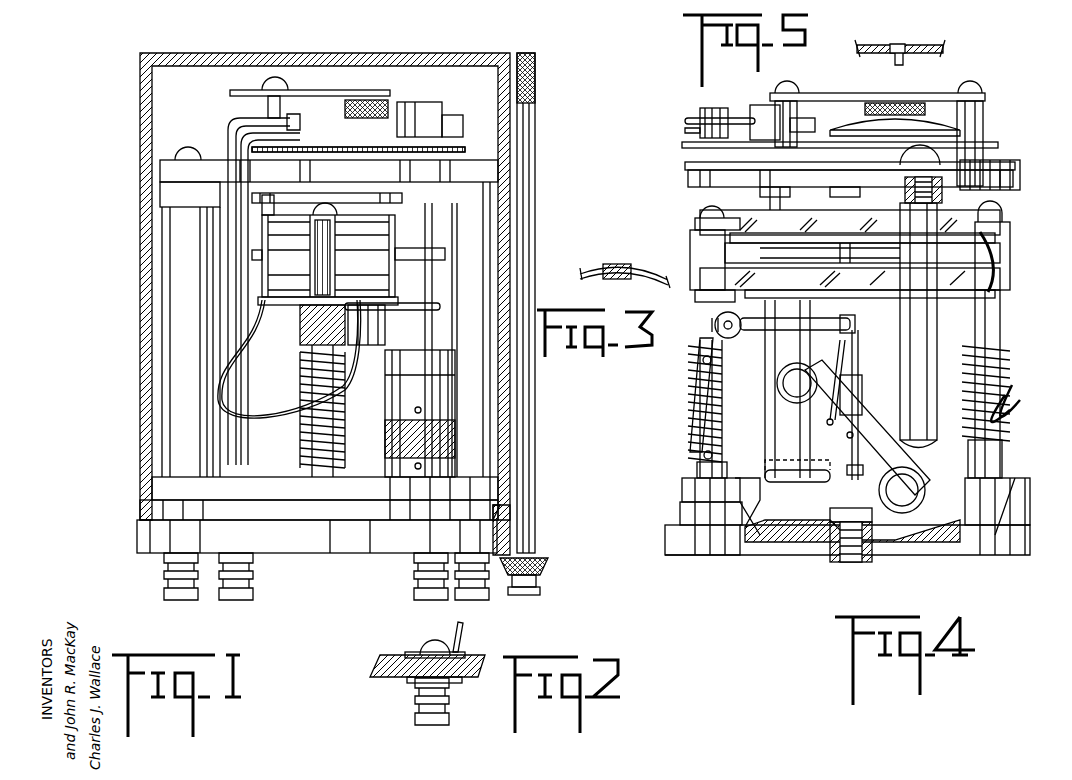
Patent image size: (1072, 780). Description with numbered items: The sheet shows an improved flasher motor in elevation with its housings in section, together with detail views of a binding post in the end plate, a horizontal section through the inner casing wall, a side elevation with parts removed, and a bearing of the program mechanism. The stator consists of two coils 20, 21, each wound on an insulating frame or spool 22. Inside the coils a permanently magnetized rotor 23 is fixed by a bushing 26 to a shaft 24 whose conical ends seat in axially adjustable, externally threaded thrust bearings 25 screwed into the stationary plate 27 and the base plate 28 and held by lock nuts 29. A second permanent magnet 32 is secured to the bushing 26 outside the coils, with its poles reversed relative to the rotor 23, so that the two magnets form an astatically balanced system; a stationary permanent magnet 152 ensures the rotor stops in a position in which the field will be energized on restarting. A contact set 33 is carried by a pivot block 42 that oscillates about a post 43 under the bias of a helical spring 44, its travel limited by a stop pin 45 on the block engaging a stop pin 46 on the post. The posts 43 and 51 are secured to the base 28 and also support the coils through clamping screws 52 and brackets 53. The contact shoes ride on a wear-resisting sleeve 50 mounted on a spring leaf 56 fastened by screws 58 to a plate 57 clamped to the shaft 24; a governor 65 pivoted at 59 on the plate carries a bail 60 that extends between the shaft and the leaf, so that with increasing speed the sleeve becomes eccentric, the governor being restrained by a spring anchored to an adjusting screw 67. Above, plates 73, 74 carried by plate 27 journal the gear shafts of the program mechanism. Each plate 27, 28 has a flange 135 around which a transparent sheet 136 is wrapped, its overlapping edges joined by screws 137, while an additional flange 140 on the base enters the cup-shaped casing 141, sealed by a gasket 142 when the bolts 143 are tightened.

In FIG. 1, the coil 20 is at (215, 262).
In FIG. 1, the coil 21 is at (290, 233).
In FIG. 1, the frame or spool 22 is at (283, 315).
In FIG. 1, the rotor 23 is at (262, 292).
In FIG. 4, the shaft 24 is at (870, 297).
In FIG. 4, the thrust bearing 25 is at (850, 528).
In FIG. 4, the bushing 26 is at (930, 196).
In FIG. 1, the stationary plate 27 is at (300, 230).
In FIG. 4, the stationary plate 27 is at (800, 170).
In FIG. 1, the base plate 28 is at (313, 530).
In FIG. 2, the base plate 28 is at (455, 660).
In FIG. 4, the base plate 28 is at (685, 540).
In FIG. 4, the lock nut 29 is at (890, 530).
In FIG. 1, the permanent magnet 32 is at (400, 212).
In FIG. 1, the contact set 33 is at (440, 306).
In FIG. 4, the contact set 33 is at (722, 320).
In FIG. 1, the pivot block 42 is at (305, 365).
In FIG. 1, the post 43 is at (305, 455).
In FIG. 4, the post 43 is at (705, 457).
In FIG. 1, the helical spring 44 is at (345, 410).
In FIG. 4, the helical spring 44 is at (690, 408).
In FIG. 4, the stop pin 45 is at (690, 347).
In FIG. 4, the stop pin 46 is at (692, 362).
In FIG. 4, the sleeve 50 is at (960, 336).
In FIG. 4, the post 51 is at (985, 465).
In FIG. 1, the clamping screw 52 is at (285, 237).
In FIG. 4, the clamping screw 52 is at (990, 225).
In FIG. 1, the bracket 53 is at (255, 221).
In FIG. 4, the bracket 53 is at (697, 222).
In FIG. 4, the spring leaf 56 is at (843, 343).
In FIG. 4, the plate 57 is at (862, 393).
In FIG. 4, the screw 58 is at (825, 485).
In FIG. 4, the pivot 59 is at (852, 432).
In FIG. 4, the bail 60 is at (858, 352).
In FIG. 4, the governor 65 is at (905, 497).
In FIG. 4, the adjusting screw 67 is at (765, 490).
In FIG. 4, the plate 73 is at (925, 96).
In FIG. 4, the plate 74 is at (820, 200).
In FIG. 1, the rim or flange 135 is at (156, 168).
In FIG. 1, the sheet 136 is at (293, 372).
In FIG. 3, the screw 137 is at (617, 266).
In FIG. 1, the flange 140 is at (170, 512).
In FIG. 1, the casing 141 is at (150, 416).
In FIG. 1, the gasket or washer 142 is at (505, 515).
In FIG. 1, the bolt 143 is at (530, 414).
In FIG. 1, the stationary permanent magnet 152 is at (445, 295).
In FIG. 4, the stationary permanent magnet 152 is at (870, 305).